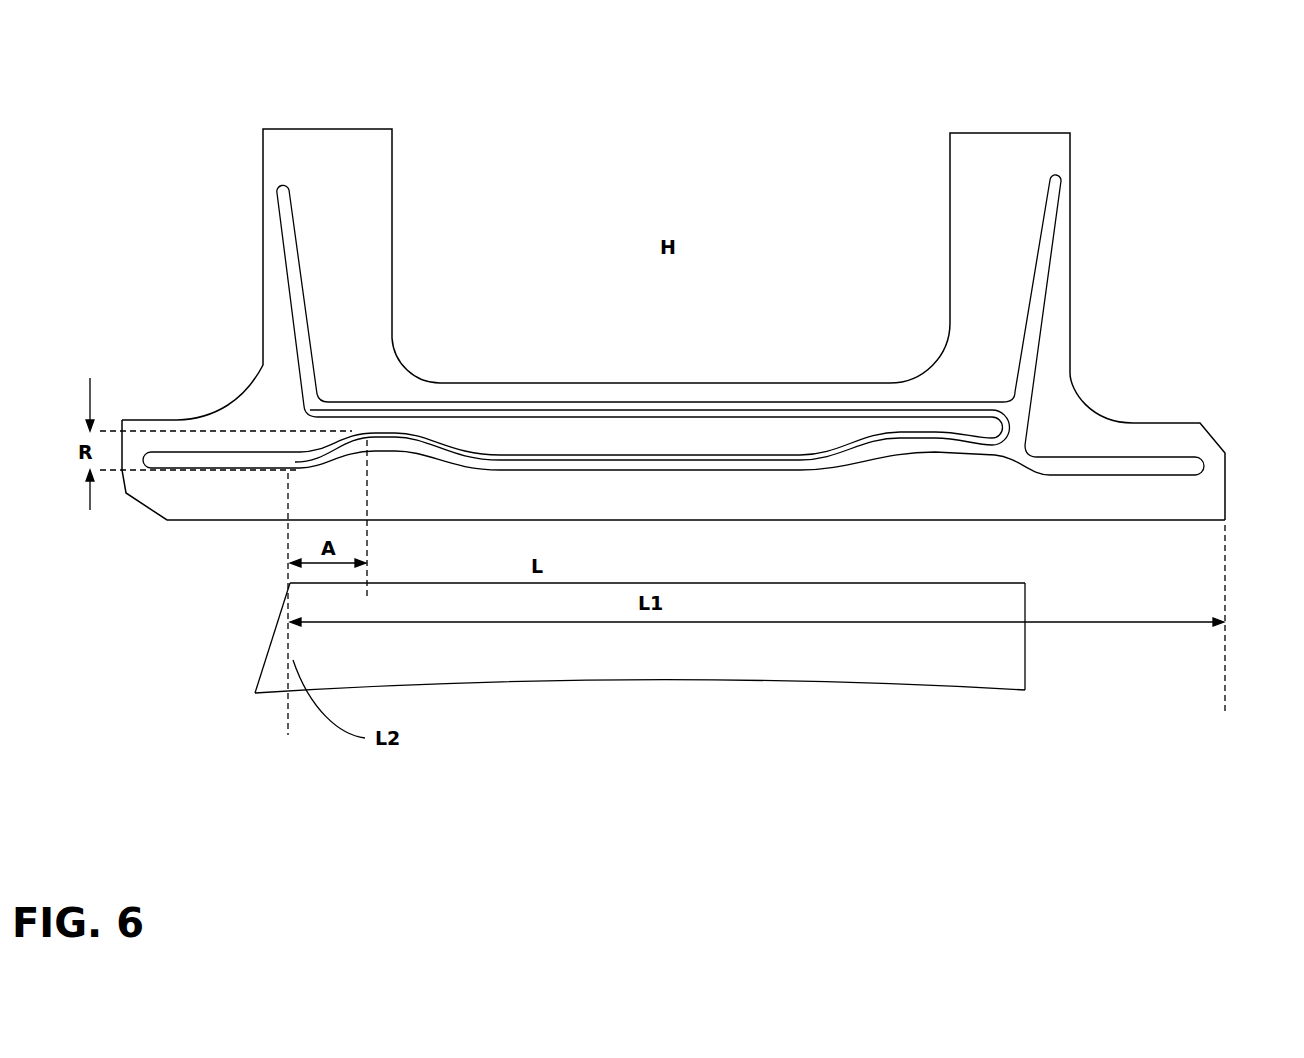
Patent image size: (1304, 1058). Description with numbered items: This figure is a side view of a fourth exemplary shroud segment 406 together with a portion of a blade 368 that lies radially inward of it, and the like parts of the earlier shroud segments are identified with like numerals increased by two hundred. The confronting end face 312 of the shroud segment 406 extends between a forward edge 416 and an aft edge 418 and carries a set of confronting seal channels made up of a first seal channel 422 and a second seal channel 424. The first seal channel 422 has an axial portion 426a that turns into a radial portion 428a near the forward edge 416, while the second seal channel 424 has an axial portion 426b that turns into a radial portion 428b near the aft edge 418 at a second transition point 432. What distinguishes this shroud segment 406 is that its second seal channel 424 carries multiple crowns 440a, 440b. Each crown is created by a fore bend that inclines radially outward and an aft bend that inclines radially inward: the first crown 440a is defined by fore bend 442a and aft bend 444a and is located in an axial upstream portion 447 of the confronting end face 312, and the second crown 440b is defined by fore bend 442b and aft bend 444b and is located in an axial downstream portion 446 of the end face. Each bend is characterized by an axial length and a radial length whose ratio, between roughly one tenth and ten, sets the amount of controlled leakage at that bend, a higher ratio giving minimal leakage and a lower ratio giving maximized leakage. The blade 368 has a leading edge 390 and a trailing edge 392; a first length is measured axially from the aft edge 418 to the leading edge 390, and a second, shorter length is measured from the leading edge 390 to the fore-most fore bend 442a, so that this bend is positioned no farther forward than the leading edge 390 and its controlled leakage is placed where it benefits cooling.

The confronting end face 312 is at (975, 182).
The blade 368 is at (972, 660).
The leading edge 390 is at (287, 648).
The trailing edge 392 is at (1028, 604).
The fourth exemplary shroud segment 406 is at (350, 104).
The forward edge 416 is at (123, 484).
The aft edge 418 is at (1229, 466).
The first seal channel 422 is at (641, 402).
The second seal channel 424 is at (618, 470).
The axial portion of first seal channel 426a is at (707, 403).
The axial portion of second seal channel 426b is at (731, 452).
The radial portion of first seal channel 428a is at (291, 230).
The radial portion of second seal channel 428b is at (1041, 276).
The second transition point 432 is at (1050, 429).
The first crown 440a is at (396, 464).
The second crown 440b is at (915, 464).
The fore bend of first crown 442a is at (297, 458).
The fore bend of second crown 442b is at (832, 458).
The aft bend of first crown 444a is at (474, 448).
The aft bend of second crown 444b is at (1016, 468).
The axial downstream portion 446 is at (887, 358).
The axial upstream portion 447 is at (481, 362).